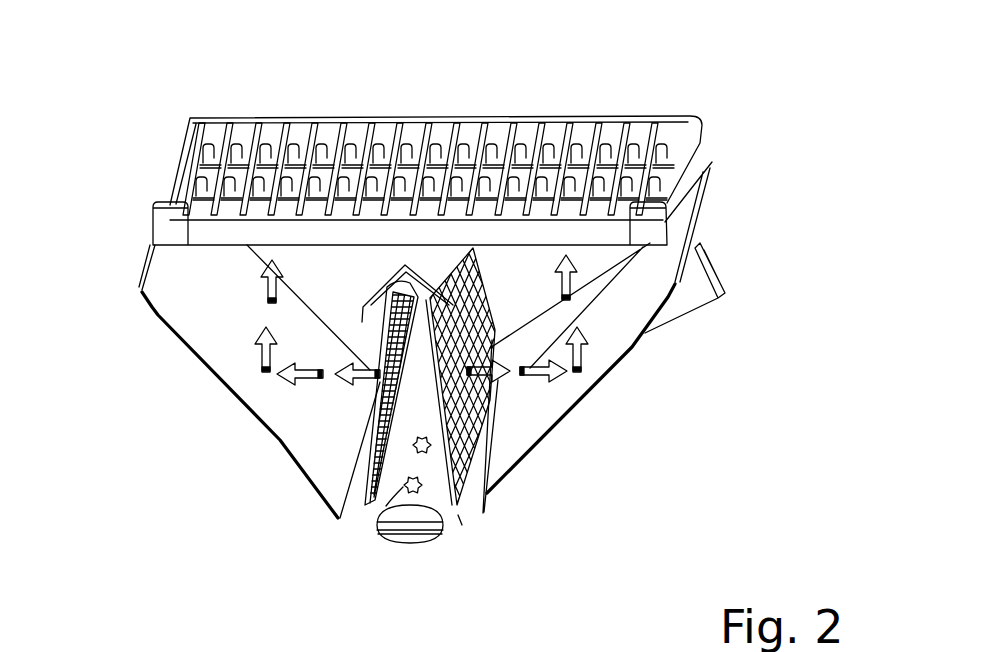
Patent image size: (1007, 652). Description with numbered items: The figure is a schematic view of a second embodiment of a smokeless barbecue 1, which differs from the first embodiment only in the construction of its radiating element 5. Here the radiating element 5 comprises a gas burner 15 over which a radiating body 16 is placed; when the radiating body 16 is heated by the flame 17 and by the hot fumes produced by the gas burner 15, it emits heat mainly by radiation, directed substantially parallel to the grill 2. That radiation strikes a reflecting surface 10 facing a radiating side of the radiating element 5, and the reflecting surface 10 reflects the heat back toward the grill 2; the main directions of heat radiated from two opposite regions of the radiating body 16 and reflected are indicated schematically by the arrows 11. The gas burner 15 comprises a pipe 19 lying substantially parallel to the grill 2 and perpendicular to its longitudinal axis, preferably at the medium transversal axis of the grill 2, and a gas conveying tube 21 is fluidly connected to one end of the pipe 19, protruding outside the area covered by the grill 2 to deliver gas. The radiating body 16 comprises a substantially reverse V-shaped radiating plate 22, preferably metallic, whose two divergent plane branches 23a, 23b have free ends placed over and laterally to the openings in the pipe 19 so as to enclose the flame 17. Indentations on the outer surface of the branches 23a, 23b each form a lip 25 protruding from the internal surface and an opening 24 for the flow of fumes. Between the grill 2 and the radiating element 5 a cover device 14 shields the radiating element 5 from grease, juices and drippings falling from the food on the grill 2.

The smokeless barbecue 1 is at (135, 150).
The grill 2 is at (697, 116).
The radiating element 5 is at (467, 530).
The reflecting surface 10 is at (170, 294).
The arrows 11 is at (265, 357).
The cover device 14 is at (370, 280).
The gas burner 15 is at (392, 537).
The radiating body 16 is at (497, 315).
The flame 17 is at (403, 487).
The pipe 19 is at (437, 485).
The gas conveying tube 21 is at (702, 243).
The reverse V-shaped radiating plate 22 is at (480, 287).
The branch 23a is at (487, 492).
The branch 23b is at (382, 467).
The opening 24 is at (466, 400).
The lip 25 is at (385, 428).